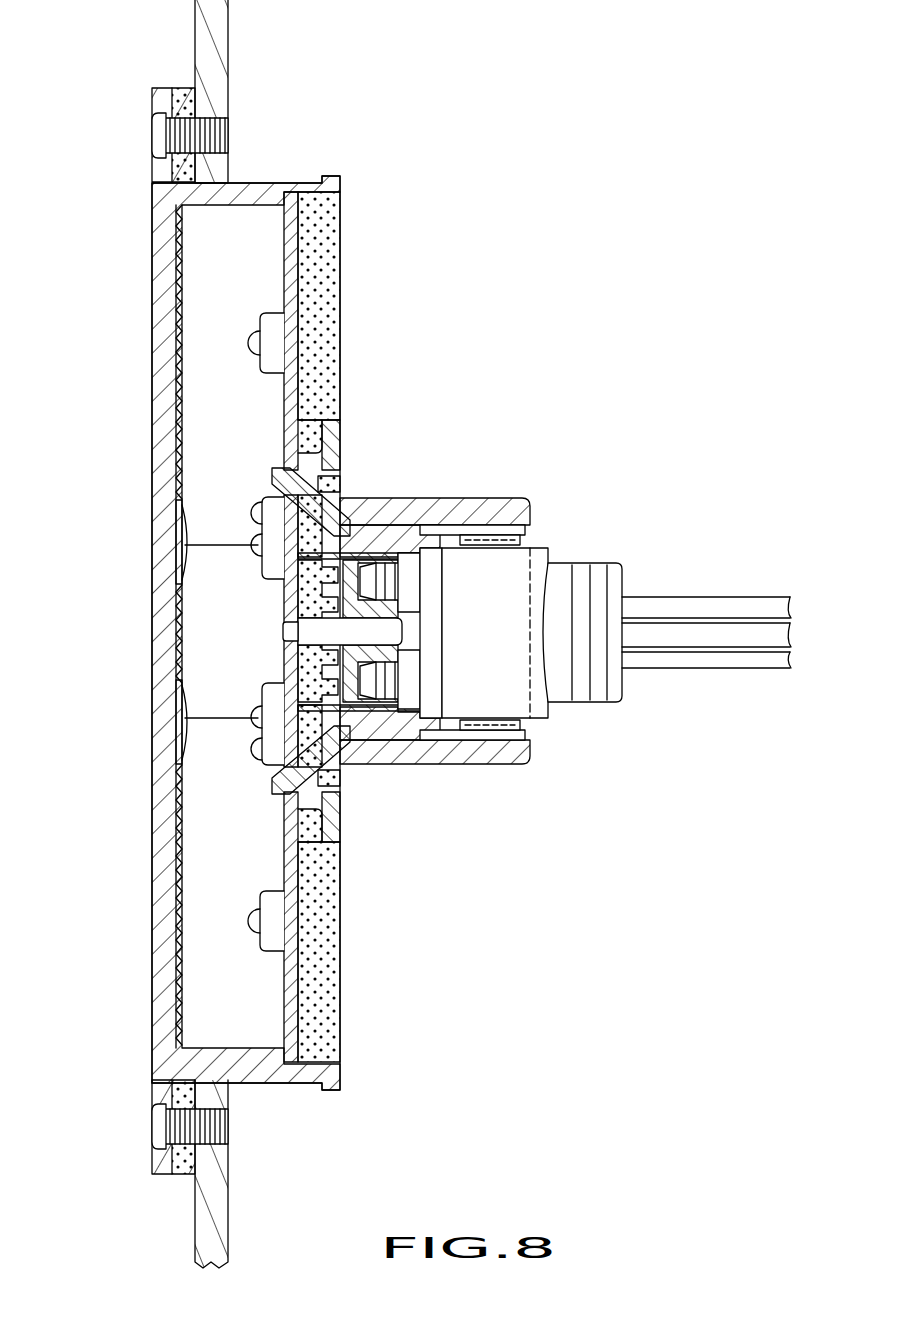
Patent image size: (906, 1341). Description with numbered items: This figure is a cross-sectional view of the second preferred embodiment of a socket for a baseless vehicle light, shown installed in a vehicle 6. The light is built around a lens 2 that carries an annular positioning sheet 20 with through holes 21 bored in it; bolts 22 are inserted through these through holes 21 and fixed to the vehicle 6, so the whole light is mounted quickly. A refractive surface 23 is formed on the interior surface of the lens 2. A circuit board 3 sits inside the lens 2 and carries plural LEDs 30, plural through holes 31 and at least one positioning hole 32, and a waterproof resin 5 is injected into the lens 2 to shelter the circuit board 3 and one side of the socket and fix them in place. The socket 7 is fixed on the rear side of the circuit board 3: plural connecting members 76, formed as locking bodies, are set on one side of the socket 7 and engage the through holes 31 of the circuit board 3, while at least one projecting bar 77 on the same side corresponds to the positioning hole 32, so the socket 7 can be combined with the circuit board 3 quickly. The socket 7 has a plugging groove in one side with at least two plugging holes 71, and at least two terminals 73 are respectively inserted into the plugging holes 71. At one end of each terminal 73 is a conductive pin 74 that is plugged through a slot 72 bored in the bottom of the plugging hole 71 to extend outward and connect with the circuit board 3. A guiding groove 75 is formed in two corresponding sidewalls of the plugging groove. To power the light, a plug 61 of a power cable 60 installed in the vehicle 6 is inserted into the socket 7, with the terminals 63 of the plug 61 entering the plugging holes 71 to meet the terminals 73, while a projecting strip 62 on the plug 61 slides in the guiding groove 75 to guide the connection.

The lens 2 is at (272, 184).
The circuit board 3 is at (293, 228).
The waterproof resin 5 is at (330, 253).
The vehicle 6 is at (215, 27).
The socket 7 is at (446, 498).
The annular positioning sheet 20 is at (160, 96).
The through holes 21 is at (156, 171).
The bolts 22 is at (175, 135).
The refractive surface 23 is at (177, 257).
The LEDs 30 is at (268, 343).
The through holes 31 is at (291, 468).
The positioning hole 32 is at (290, 622).
The power cable 60 is at (742, 606).
The plug 61 is at (515, 592).
The projecting strip 62 is at (535, 728).
The terminals 63 is at (400, 577).
The plugging holes 71 is at (408, 715).
The slot 72 is at (349, 717).
The terminals 73 is at (390, 710).
The conductive pin 74 is at (268, 722).
The guiding groove 75 is at (490, 735).
The connecting members 76 is at (280, 480).
The projecting bar 77 is at (282, 633).